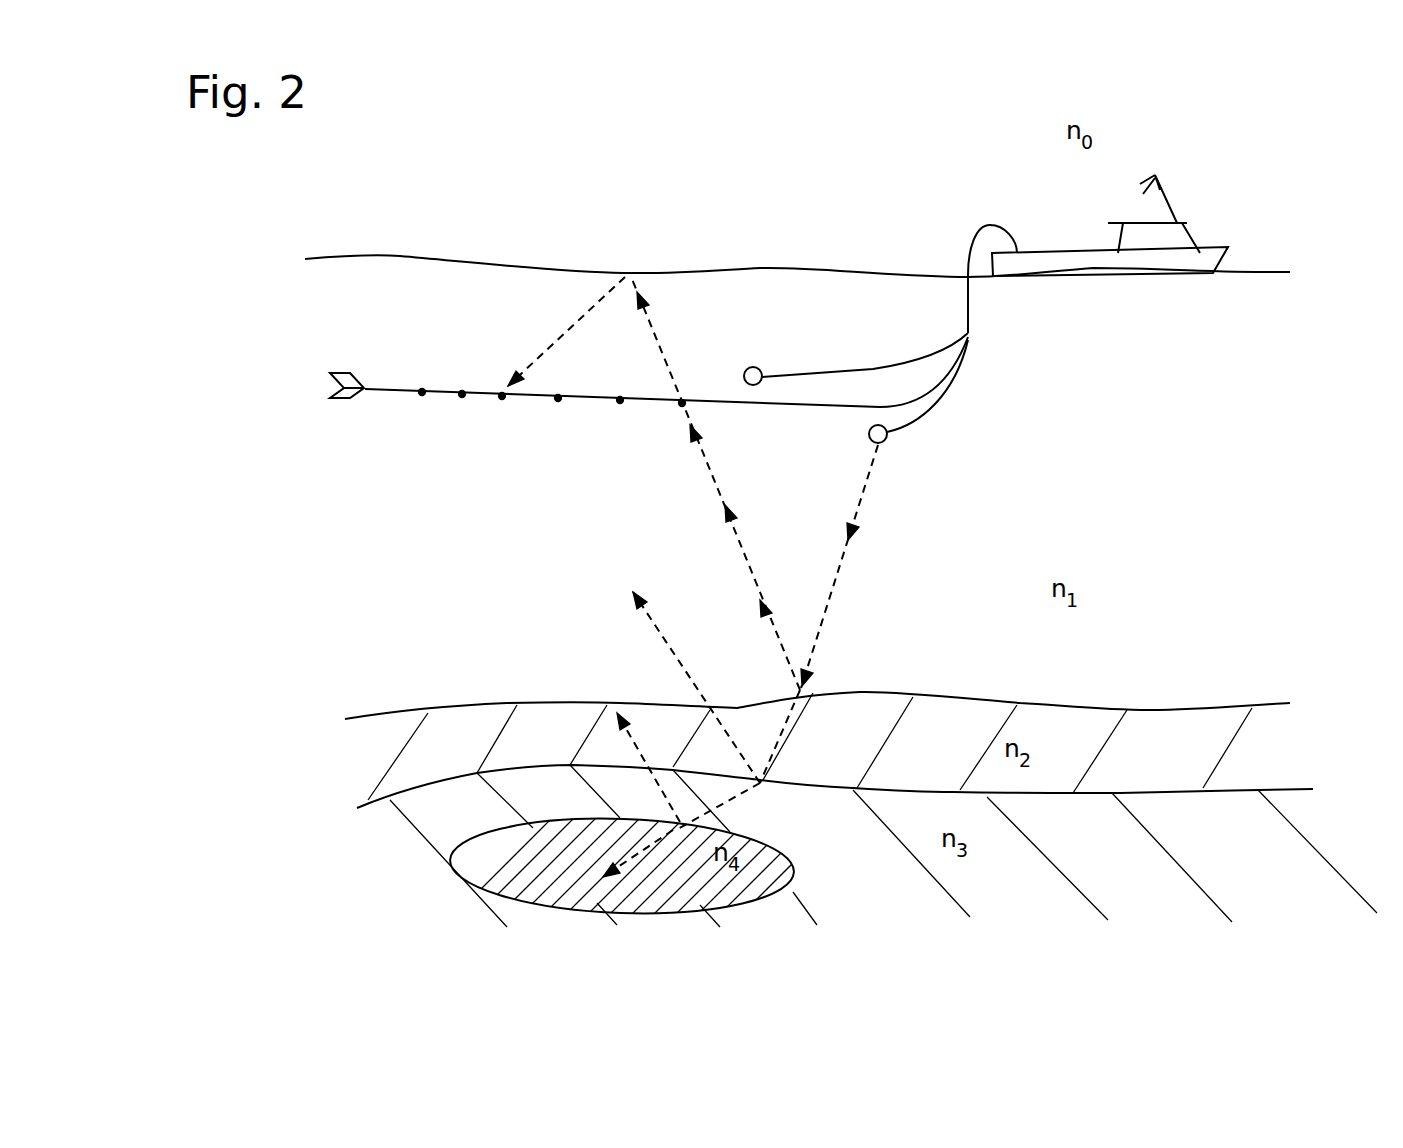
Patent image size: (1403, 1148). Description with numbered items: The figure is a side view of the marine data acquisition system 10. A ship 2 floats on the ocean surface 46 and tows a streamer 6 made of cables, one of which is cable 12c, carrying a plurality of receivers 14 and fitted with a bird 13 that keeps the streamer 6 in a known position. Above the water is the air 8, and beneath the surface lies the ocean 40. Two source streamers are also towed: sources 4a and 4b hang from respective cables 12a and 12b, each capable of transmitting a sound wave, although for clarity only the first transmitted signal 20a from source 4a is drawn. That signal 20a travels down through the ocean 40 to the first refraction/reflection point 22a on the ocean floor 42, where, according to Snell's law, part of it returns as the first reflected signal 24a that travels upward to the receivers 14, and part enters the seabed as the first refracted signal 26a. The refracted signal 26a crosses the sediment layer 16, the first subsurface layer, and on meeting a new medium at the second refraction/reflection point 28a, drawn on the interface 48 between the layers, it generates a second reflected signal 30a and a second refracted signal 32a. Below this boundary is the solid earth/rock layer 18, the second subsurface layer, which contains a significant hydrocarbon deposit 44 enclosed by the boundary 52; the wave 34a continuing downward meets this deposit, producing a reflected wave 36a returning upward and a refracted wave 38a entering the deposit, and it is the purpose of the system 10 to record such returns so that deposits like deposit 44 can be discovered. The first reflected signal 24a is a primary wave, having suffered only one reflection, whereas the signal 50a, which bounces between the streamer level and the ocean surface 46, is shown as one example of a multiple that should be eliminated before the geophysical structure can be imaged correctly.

The ship 2 is at (1213, 246).
The source 4a is at (869, 435).
The source 4b is at (750, 367).
The streamer 6 is at (458, 413).
The air 8 is at (577, 155).
The data acquisition system 10 is at (432, 168).
The cable 12a is at (873, 368).
The cable 12b is at (960, 386).
The cable 12c is at (377, 390).
The bird 13 is at (352, 375).
The receiver 14 is at (420, 394).
The sediment layer 16 is at (1268, 745).
The solid earth/rock layer 18 is at (1130, 852).
The first transmitted signal 20a is at (856, 510).
The first refraction/reflection point 22a is at (808, 690).
The first reflected signal 24a is at (735, 533).
The first refracted signal 26a is at (785, 728).
The second refraction/reflection point 28a is at (762, 785).
The reflected signal 30a is at (670, 650).
The refracted signal 32a is at (738, 797).
The transmitted ray 34a is at (705, 818).
The reflected ray 36a is at (635, 740).
The transmitted ray 38a is at (651, 862).
The ocean 40 is at (1196, 425).
The ocean floor 42 is at (1180, 708).
The hydrocarbon deposit 44 is at (546, 883).
The ocean surface 46 is at (403, 258).
The layer boundary 48 is at (1140, 787).
The signal 50a is at (582, 322).
The reservoir boundary 52 is at (775, 842).